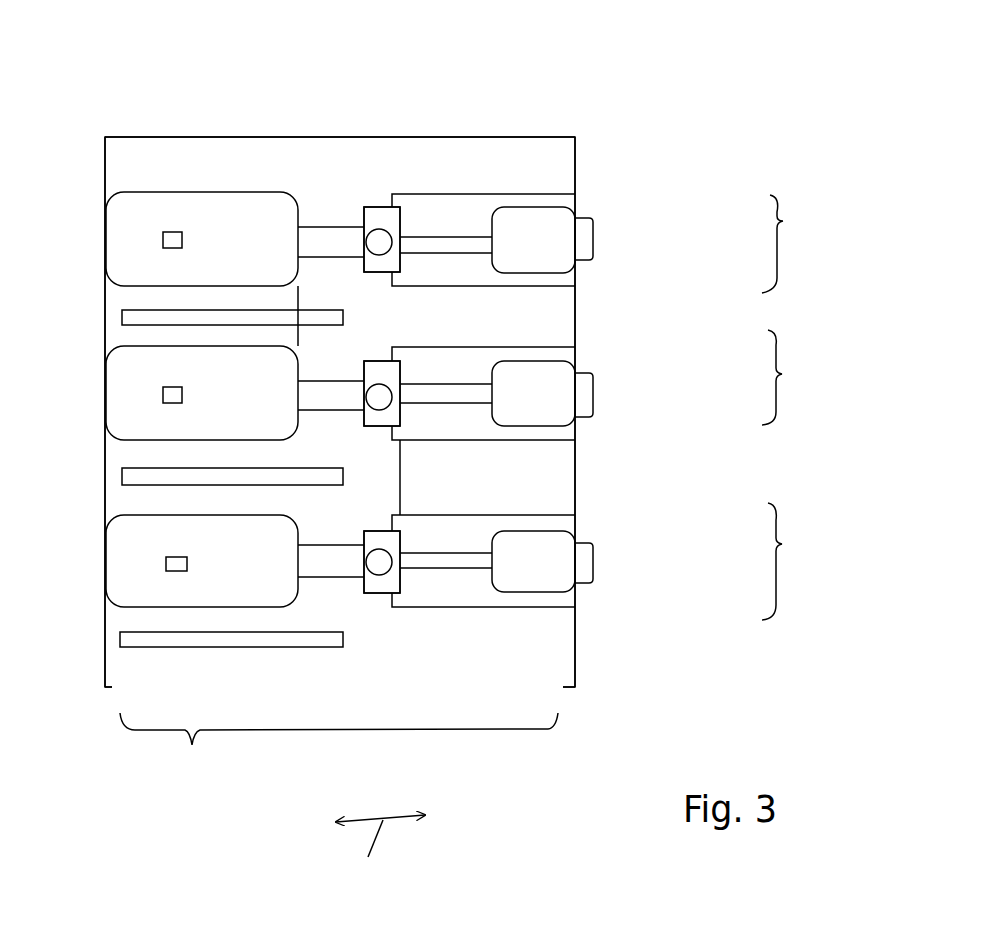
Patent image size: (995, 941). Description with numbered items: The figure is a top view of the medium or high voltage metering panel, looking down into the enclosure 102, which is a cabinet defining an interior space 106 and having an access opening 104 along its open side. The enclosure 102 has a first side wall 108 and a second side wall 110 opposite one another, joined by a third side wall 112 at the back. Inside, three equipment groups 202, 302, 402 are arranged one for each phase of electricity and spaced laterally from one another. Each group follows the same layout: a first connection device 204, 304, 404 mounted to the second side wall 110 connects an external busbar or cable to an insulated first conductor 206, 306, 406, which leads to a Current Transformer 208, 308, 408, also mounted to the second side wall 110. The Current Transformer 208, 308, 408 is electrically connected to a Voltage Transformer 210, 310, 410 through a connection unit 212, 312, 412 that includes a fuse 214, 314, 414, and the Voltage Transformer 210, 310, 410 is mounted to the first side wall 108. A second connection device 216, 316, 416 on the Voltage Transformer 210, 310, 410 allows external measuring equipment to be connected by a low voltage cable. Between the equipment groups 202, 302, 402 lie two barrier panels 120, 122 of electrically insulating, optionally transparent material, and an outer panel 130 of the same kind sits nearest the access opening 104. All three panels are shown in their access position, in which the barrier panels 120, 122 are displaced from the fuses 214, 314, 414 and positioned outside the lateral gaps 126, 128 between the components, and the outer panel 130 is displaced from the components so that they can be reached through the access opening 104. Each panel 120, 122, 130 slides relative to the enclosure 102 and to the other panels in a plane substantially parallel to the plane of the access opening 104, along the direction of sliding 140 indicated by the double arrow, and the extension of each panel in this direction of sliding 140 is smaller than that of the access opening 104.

The enclosure 102 is at (583, 163).
The access opening 104 is at (339, 756).
The interior space 106 is at (506, 643).
The first side wall 108 is at (105, 298).
The second side wall 110 is at (578, 310).
The third side wall 112 is at (245, 137).
The barrier panel 120 is at (285, 470).
The barrier panel 122 is at (292, 318).
The lateral gap 126 is at (383, 457).
The lateral gap 128 is at (385, 291).
The outer panel 130 is at (137, 640).
The direction of sliding 140 is at (380, 857).
The equipment group 202 is at (430, 558).
The first connection device 204 is at (580, 545).
The first conductor 206 is at (417, 562).
The Current Transformer 208 is at (438, 532).
The Voltage Transformer 210 is at (130, 543).
The connection unit 212 is at (372, 588).
The fuse 214 is at (365, 531).
The second connection device 216 is at (166, 562).
The equipment group 302 is at (434, 397).
The first connection device 304 is at (580, 392).
The first conductor 306 is at (418, 393).
The Current Transformer 308 is at (447, 365).
The Voltage Transformer 310 is at (130, 383).
The connection unit 312 is at (371, 418).
The fuse 314 is at (378, 372).
The second connection device 316 is at (163, 393).
The equipment group 402 is at (442, 187).
The first connection device 404 is at (583, 240).
The first conductor 406 is at (427, 195).
The Current Transformer 408 is at (440, 215).
The Voltage Transformer 410 is at (135, 230).
The connection unit 412 is at (358, 233).
The fuse 414 is at (378, 207).
The second connection device 416 is at (163, 238).